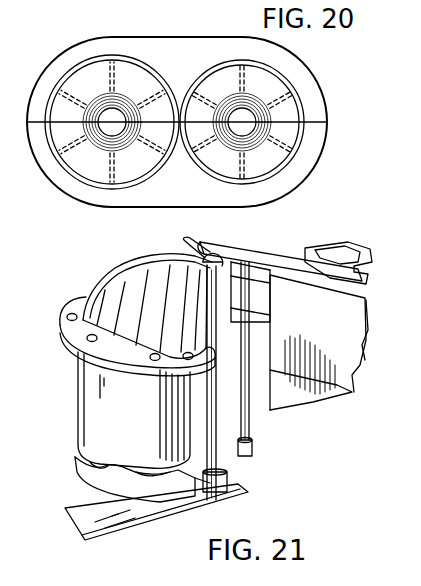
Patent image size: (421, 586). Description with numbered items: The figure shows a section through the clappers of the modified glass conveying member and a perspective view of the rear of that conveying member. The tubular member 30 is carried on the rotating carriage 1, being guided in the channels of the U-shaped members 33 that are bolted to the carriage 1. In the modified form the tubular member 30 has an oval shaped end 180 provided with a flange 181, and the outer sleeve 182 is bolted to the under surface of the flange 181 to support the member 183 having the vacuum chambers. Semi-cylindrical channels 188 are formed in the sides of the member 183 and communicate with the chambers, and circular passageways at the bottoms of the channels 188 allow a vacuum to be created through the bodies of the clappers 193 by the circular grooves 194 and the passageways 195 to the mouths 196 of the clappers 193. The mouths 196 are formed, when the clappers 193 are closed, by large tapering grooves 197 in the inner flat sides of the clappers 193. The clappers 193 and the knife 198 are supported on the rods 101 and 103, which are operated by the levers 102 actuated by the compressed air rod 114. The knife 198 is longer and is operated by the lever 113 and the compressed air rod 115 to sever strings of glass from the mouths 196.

In FIG. 20, the clappers 193 is at (300, 76).
In FIG. 21, the clappers 193 is at (78, 476).
In FIG. 20, the circular grooves 194 is at (152, 72).
In FIG. 20, the passageways 195 is at (86, 57).
In FIG. 20, the mouths 196 is at (265, 127).
In FIG. 20, the tapering grooves 197 is at (263, 113).
In FIG. 21, the oval shaped ends 180 is at (120, 303).
In FIG. 21, the flanges 181 is at (78, 329).
In FIG. 21, the outer sleeve 182 is at (93, 383).
In FIG. 21, the knife 198 is at (115, 517).
In FIG. 21, the lever 113 is at (192, 244).
In FIG. 21, the levers 102 is at (237, 243).
In FIG. 21, the rod 101 is at (248, 412).
In FIG. 21, the rod 103 is at (226, 450).
In FIG. 21, the tubular member 30 is at (252, 285).
In FIG. 21, the carriage 1 is at (310, 392).
In FIG. 21, the U-shaped members 33 is at (340, 347).
In FIG. 21, the rod 114 is at (352, 262).
In FIG. 21, the rod 115 is at (316, 262).
In FIG. 21, the semi-cylindrical channels 188 is at (0, 521).
In FIG. 21, the member 183 is at (13, 569).